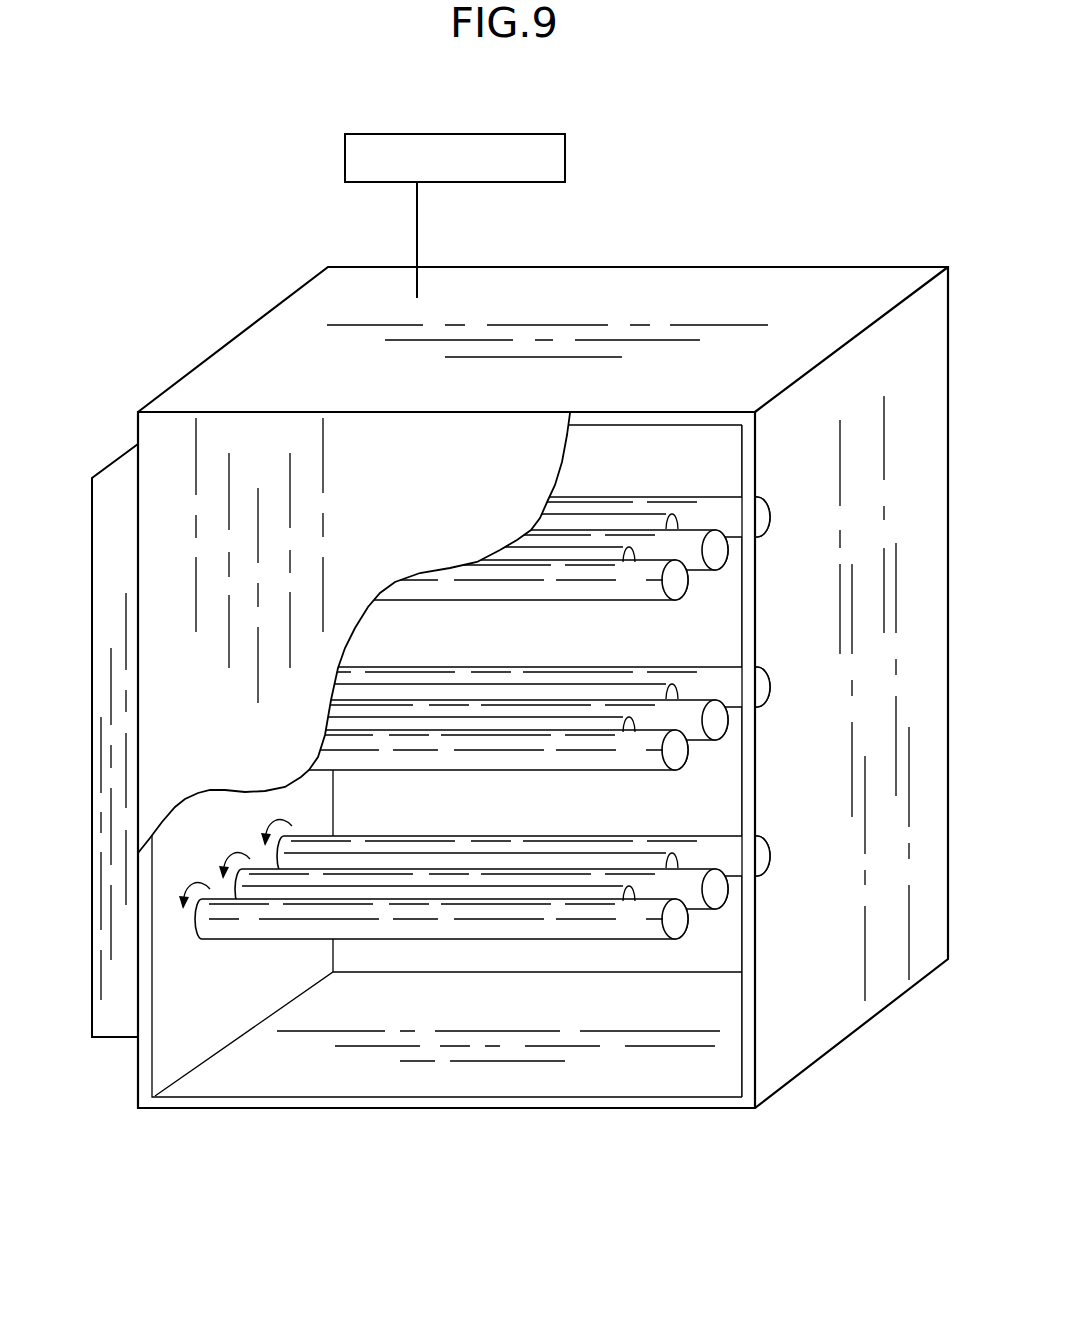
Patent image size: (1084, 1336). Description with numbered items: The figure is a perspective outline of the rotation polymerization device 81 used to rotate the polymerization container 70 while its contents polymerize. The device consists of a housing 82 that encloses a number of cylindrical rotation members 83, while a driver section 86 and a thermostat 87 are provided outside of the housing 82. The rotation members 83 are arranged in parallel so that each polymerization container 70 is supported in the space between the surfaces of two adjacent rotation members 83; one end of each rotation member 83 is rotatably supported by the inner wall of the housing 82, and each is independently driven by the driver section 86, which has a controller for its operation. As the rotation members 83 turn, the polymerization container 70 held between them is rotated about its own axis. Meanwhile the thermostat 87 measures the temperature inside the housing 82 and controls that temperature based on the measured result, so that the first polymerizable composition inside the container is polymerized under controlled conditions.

The polymerization container 70 is at (492, 860).
The rotation polymerization device 81 is at (520, 706).
The housing 82 is at (543, 691).
The rotation members 83 is at (245, 886).
The driver section 86 is at (121, 468).
The thermostat 87 is at (565, 157).